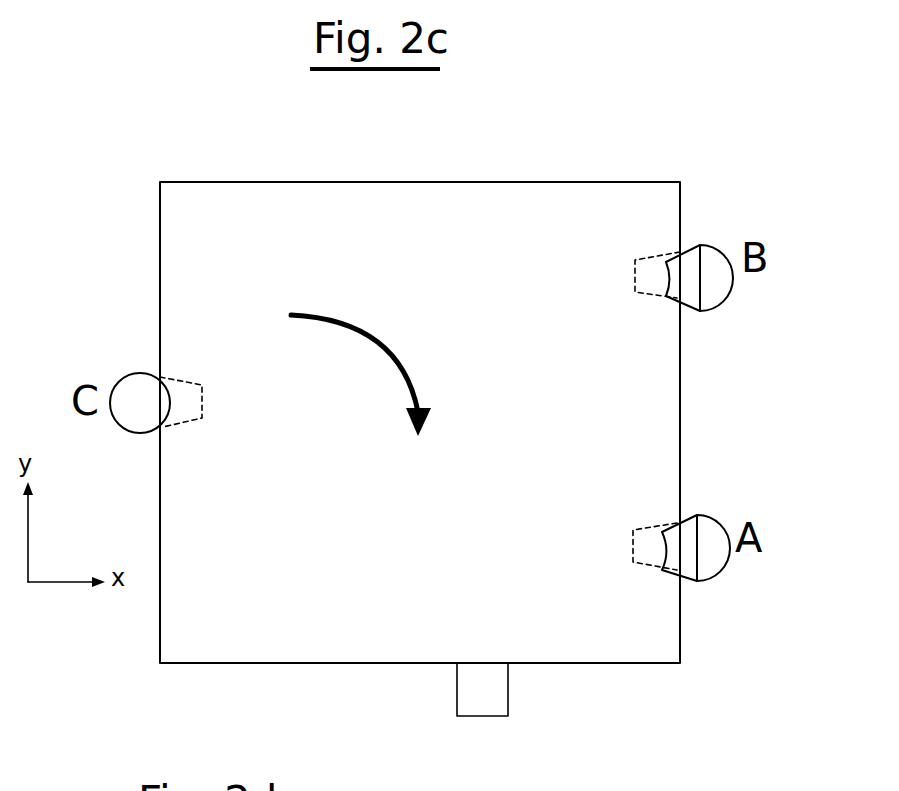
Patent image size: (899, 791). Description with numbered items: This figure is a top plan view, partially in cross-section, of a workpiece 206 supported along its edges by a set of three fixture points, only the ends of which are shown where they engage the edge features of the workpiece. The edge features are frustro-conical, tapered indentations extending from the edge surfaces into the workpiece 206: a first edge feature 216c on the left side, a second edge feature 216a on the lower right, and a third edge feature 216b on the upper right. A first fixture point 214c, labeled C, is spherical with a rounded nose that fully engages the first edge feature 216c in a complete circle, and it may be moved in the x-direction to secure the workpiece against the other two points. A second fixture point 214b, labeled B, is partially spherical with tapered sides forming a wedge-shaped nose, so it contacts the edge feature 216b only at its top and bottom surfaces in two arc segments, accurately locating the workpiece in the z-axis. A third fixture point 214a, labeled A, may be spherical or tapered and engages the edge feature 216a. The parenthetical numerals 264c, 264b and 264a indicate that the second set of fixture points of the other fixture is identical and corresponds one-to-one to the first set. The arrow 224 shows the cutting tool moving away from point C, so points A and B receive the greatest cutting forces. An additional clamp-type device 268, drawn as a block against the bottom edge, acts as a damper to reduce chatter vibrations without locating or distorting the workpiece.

The workpiece 206 is at (523, 176).
The additional clamp-type device 268 is at (508, 690).
The arrow 224 is at (398, 348).
The third fixture point 214a is at (749, 601).
The second set fixture point 264a is at (710, 563).
The second edge feature 216a is at (650, 523).
The second fixture point 214b is at (752, 336).
The second set fixture point 264b is at (715, 292).
The third edge feature 216b is at (647, 298).
The first fixture point 214c is at (93, 356).
The second set fixture point 264c is at (120, 382).
The first edge feature 216c is at (203, 418).